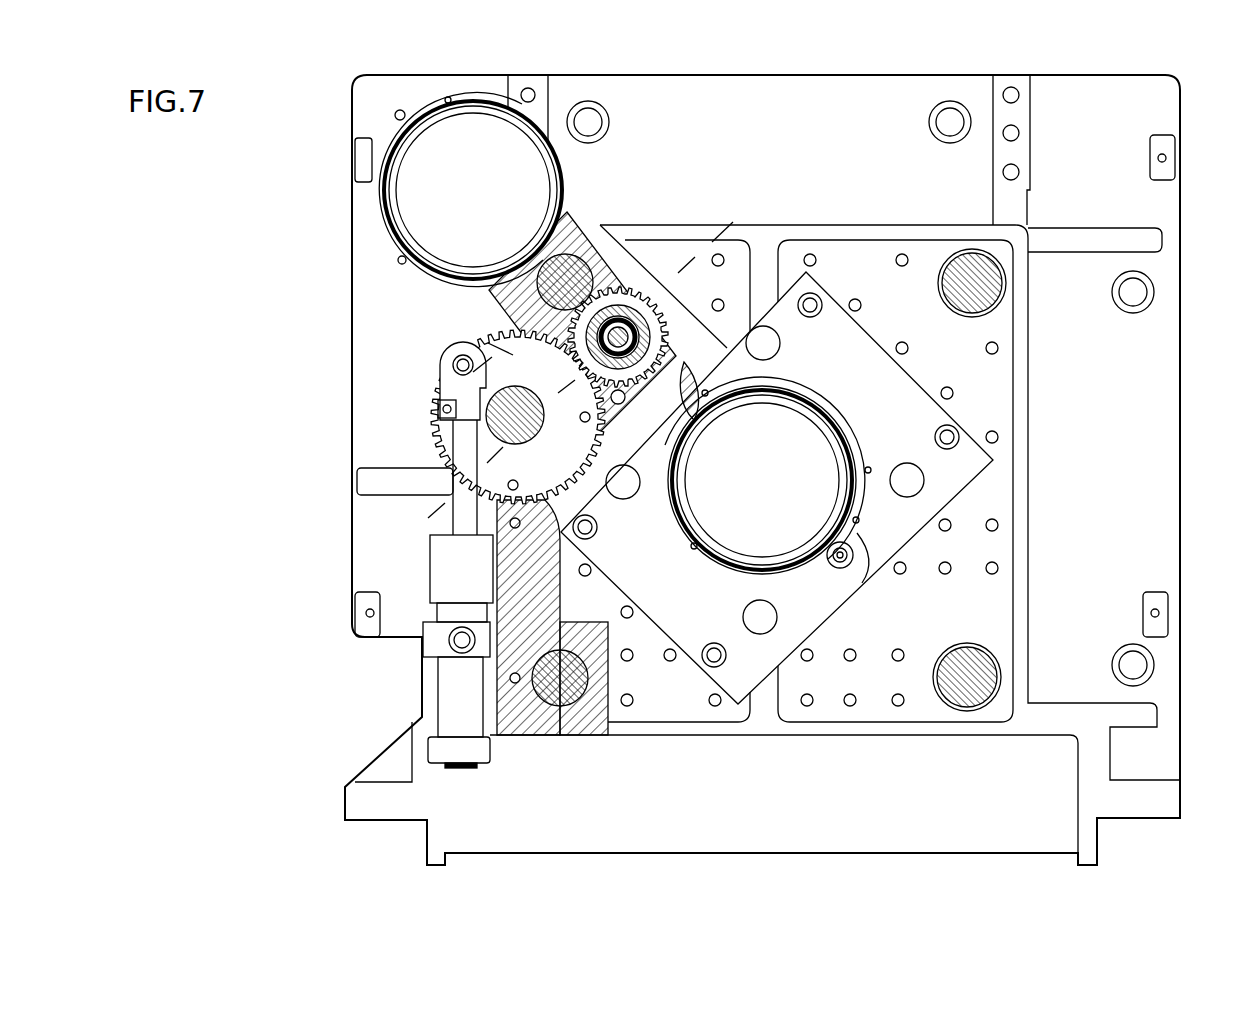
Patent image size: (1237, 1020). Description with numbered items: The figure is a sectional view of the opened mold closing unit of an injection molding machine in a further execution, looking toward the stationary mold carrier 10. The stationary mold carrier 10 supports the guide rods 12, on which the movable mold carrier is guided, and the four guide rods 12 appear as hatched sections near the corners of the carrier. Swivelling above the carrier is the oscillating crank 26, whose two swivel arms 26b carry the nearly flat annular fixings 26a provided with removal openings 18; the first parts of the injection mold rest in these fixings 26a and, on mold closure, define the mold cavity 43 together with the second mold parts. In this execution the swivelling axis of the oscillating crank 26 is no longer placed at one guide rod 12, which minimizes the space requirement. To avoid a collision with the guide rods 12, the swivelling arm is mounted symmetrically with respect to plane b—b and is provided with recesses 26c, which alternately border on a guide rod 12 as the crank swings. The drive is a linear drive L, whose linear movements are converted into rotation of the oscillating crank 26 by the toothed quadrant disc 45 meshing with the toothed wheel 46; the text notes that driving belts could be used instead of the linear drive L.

The stationary mold carrier 10 is at (778, 805).
The guide rods 12 is at (578, 266).
The removal openings 18 is at (427, 232).
The oscillating crank 26 is at (738, 328).
The annular fixings 26a is at (368, 200).
The swivel arms 26b is at (720, 367).
The recesses 26c is at (687, 420).
The mold cavity 43 is at (777, 491).
The toothed quadrant disc 45 is at (467, 345).
The toothed wheel 46 is at (640, 300).
The plane b— b is at (572, 364).
The linear drive L is at (460, 576).